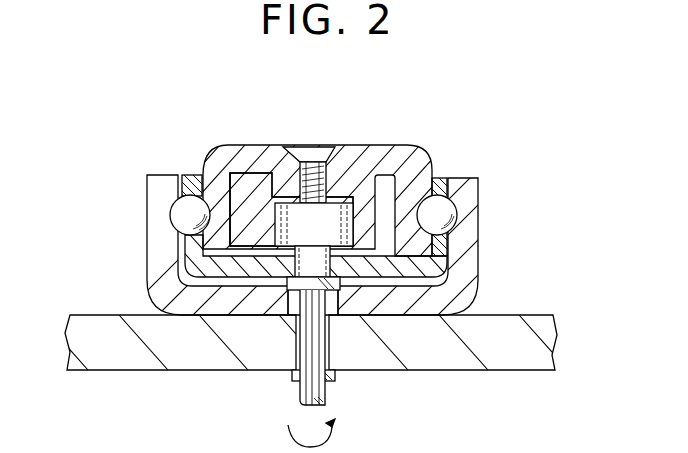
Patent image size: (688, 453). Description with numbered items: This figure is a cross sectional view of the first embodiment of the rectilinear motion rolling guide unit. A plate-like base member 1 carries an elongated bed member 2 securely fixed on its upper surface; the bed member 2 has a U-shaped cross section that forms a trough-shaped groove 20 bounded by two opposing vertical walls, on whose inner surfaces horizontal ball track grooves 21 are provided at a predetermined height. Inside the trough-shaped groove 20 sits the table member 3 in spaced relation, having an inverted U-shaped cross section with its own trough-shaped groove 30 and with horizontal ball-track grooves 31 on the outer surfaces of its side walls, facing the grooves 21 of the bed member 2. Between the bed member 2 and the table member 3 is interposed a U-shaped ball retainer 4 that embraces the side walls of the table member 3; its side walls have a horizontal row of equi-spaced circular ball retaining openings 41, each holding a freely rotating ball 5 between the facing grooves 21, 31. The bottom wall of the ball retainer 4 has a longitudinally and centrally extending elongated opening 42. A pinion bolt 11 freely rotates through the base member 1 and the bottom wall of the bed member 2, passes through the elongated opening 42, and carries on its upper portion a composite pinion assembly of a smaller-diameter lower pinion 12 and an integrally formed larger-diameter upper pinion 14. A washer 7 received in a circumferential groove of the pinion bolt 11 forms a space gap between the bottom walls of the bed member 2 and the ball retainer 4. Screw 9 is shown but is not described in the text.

The base member 1 is at (524, 355).
The bed member 2 is at (470, 253).
The trough-shaped groove 20 is at (443, 282).
The elongated opening 42 is at (353, 280).
The table member 3 is at (402, 157).
The trough-shaped groove 30 is at (266, 211).
The ball-track groove 31 is at (212, 216).
The ball retainer 4 is at (443, 180).
The ball retaining opening 41 is at (190, 174).
The ball 5 is at (445, 229).
The ball track groove 21 is at (169, 216).
The screw 9 is at (323, 147).
The upper pinion 14 is at (324, 237).
The lower pinion 12 is at (324, 271).
The washer 7 is at (329, 283).
The pinion bolt 11 is at (326, 392).